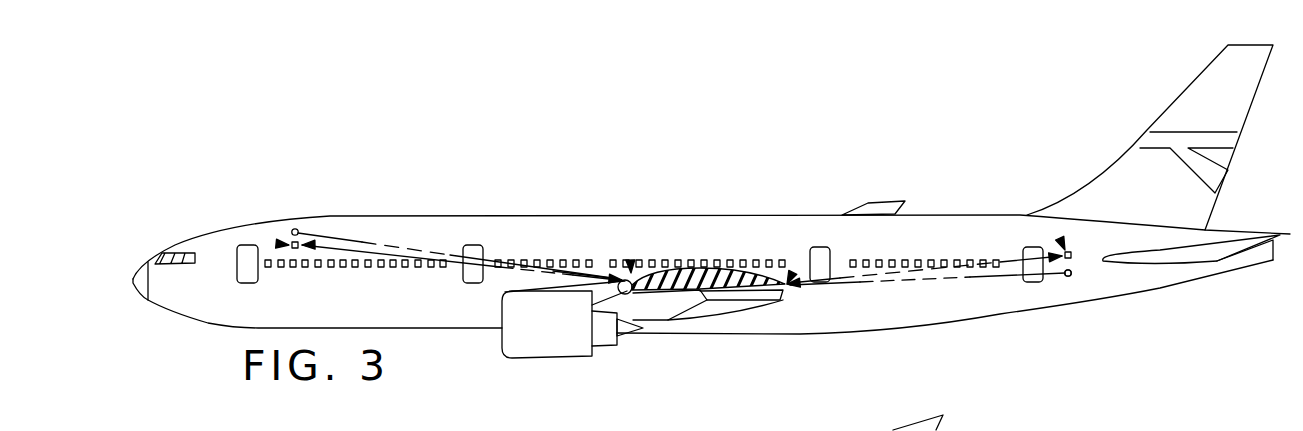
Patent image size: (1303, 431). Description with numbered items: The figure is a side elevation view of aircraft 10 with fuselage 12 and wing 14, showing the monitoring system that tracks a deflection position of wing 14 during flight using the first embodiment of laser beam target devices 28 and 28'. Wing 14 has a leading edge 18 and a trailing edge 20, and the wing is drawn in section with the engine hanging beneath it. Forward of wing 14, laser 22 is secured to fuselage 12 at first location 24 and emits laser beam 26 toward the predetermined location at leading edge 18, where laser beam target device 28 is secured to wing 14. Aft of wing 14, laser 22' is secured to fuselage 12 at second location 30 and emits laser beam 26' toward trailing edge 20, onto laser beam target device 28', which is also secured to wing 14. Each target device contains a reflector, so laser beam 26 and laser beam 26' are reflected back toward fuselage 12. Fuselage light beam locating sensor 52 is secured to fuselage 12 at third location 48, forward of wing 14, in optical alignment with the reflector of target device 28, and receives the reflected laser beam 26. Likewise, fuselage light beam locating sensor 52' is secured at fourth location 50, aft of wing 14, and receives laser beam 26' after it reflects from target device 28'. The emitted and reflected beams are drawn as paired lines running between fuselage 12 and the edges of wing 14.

The aircraft 10 is at (641, 230).
The fuselage 12 is at (925, 230).
The wing 14 is at (703, 270).
The leading edge 18 is at (603, 313).
The trailing edge 20 is at (783, 288).
The laser 22 is at (248, 198).
The laser 22' is at (1129, 295).
The first location 24 is at (302, 222).
The laser beam 26 is at (462, 262).
The laser beam 26' is at (926, 290).
The laser beam target device 28 is at (602, 233).
The laser beam target device 28' is at (822, 251).
The second location 30 is at (1075, 286).
The third location 48 is at (288, 260).
The fourth location 50 is at (1069, 243).
The fuselage light beam locating sensor 52 is at (219, 233).
The fuselage light beam locating sensor 52' is at (1021, 200).